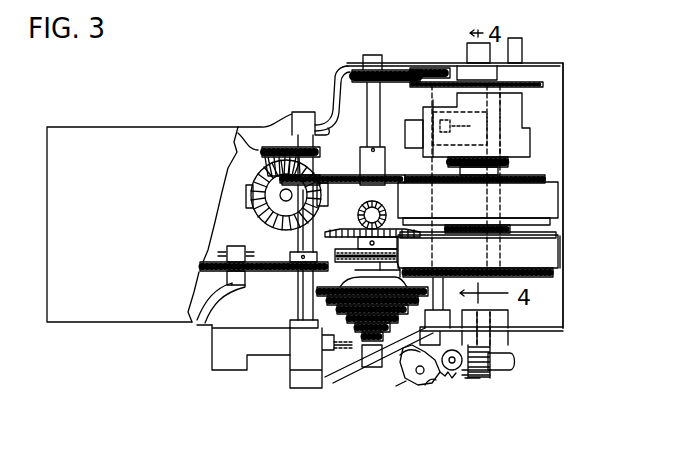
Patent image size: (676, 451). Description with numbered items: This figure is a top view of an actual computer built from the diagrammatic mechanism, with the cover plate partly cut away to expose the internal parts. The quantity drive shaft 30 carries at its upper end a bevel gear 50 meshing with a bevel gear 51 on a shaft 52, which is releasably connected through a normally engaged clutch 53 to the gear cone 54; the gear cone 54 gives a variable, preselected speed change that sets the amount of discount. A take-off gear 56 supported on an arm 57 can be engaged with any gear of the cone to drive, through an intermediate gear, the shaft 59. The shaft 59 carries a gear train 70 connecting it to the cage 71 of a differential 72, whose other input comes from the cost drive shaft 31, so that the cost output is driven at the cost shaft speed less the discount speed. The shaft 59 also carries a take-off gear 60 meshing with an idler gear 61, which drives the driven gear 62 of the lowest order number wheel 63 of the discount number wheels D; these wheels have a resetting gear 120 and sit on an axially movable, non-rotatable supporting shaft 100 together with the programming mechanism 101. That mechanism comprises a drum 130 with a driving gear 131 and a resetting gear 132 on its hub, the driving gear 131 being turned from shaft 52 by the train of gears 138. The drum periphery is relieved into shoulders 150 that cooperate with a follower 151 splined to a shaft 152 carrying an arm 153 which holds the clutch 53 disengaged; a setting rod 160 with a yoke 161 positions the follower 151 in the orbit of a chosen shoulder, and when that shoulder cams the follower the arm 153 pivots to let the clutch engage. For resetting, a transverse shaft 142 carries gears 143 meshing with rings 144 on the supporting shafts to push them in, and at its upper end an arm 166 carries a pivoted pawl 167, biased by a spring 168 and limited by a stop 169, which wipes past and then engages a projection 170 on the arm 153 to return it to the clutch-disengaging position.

The quantity drive shaft 30 is at (362, 219).
The cost drive shaft 31 is at (280, 193).
The bevel gear 50 is at (358, 212).
The bevel gear 51 is at (342, 236).
The shaft 52 is at (363, 98).
The normally engaged clutch 53 is at (336, 256).
The gear cone 54 is at (340, 301).
The take-off gear 56 is at (335, 350).
The arm 57 is at (275, 355).
The shaft 59 is at (297, 295).
The take-off gear 60 is at (318, 160).
The idler gear 61 is at (348, 176).
The driven gear 62 is at (548, 179).
The lowest order number wheel 63 is at (556, 206).
The gear train 70 is at (286, 140).
The cage 71 is at (240, 149).
The differential 72 is at (245, 182).
The supporting shaft 100 is at (482, 50).
The predetermining or programming mechanism 101 is at (537, 96).
The resetting gear 120 is at (555, 229).
The drum 130 is at (531, 140).
The driving gear 131 is at (522, 82).
The resetting gear 132 is at (520, 162).
The train of gears 138 is at (386, 70).
The transverse shaft 142 is at (455, 370).
The gears 143 is at (468, 374).
The rings 144 is at (492, 350).
The shoulders or steps 150 is at (480, 115).
The follower 151 is at (420, 118).
The shaft 152 is at (414, 142).
The arm 153 is at (382, 270).
The setting rod 160 is at (500, 362).
The yoke 161 is at (503, 135).
The arm 166 is at (443, 380).
The pivoted pawl 167 is at (410, 378).
The spring 168 is at (432, 385).
The stop 169 is at (425, 386).
The projection 170 is at (412, 362).
The discount number wheels D is at (567, 251).